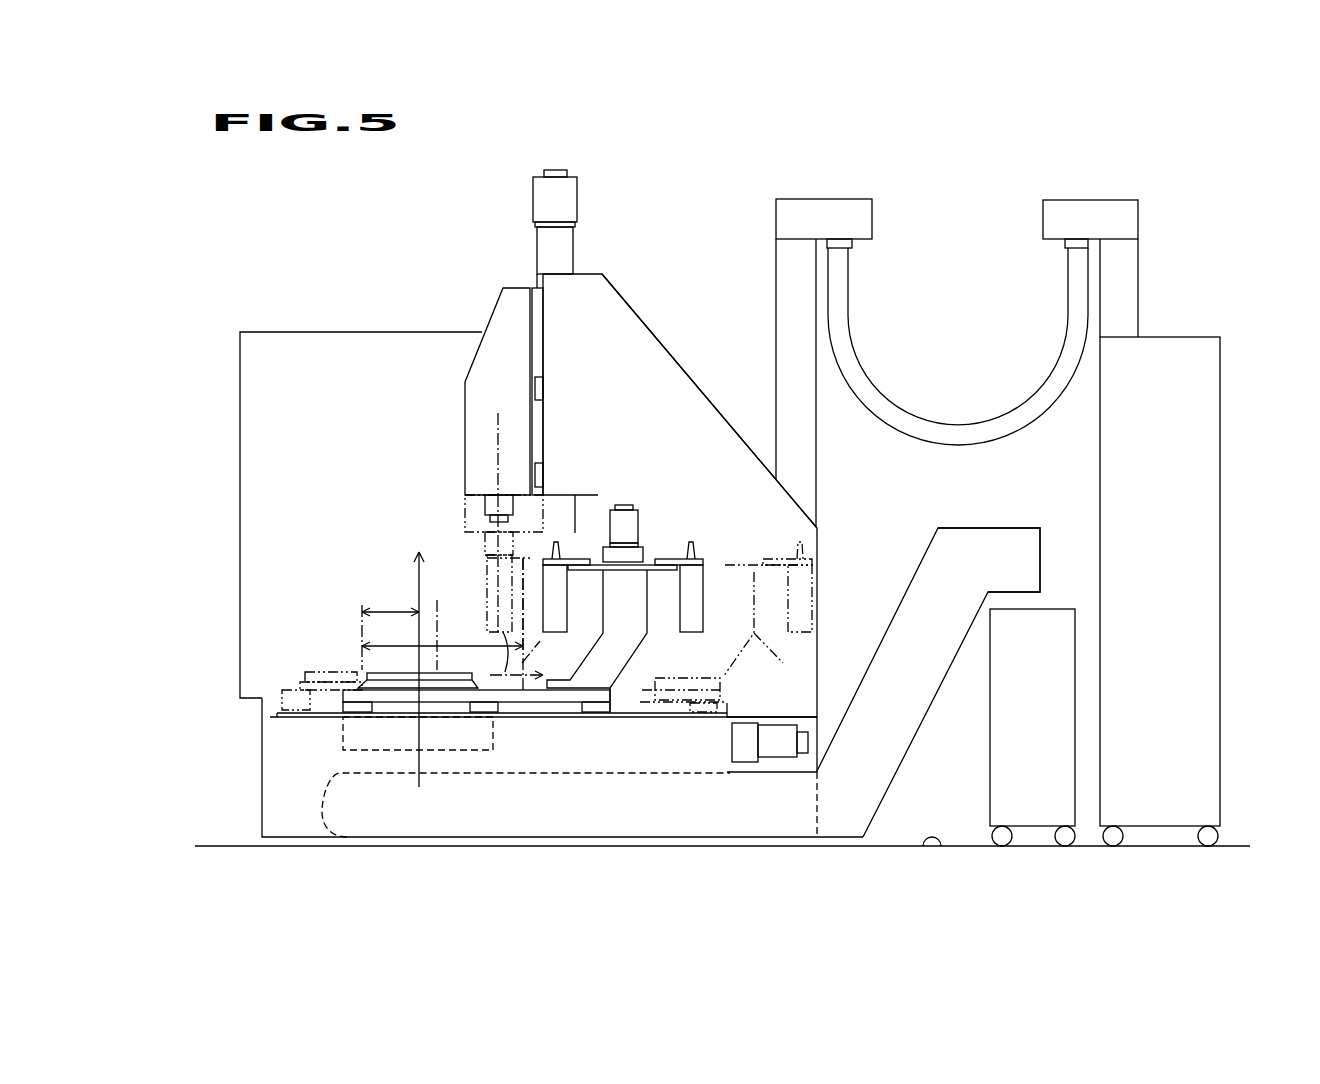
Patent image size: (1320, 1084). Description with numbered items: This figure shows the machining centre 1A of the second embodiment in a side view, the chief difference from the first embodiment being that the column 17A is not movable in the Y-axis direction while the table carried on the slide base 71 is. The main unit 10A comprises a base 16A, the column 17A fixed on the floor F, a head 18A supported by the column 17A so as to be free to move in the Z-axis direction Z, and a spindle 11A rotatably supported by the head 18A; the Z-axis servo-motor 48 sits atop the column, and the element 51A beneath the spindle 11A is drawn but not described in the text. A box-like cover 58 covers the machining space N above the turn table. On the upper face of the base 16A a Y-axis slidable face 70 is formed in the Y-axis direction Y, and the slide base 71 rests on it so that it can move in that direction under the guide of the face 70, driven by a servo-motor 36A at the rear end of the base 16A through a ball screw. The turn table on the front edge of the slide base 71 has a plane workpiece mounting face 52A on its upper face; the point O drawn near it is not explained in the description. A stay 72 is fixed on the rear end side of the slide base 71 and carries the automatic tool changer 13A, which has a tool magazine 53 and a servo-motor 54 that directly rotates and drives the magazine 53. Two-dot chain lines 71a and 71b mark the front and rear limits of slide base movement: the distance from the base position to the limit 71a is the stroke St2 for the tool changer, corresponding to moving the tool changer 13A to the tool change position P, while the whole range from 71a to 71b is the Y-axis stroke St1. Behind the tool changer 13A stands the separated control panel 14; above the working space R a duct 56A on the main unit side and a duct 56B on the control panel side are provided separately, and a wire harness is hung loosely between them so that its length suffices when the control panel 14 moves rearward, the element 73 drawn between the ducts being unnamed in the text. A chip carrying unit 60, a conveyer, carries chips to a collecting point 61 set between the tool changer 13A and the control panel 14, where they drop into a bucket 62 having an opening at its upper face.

The machining centre 1A is at (697, 190).
The main unit 10A is at (642, 321).
The spindle 11A is at (470, 545).
The automatic tool changer 13A is at (590, 573).
The separated control panel 14 is at (1100, 432).
The base 16A is at (262, 786).
The column 17A is at (681, 368).
The head 18A is at (466, 388).
The servo-motor 36A is at (775, 752).
The Z-axis servo-motor 48 is at (538, 198).
The tool holder 51A is at (493, 521).
The workpiece mounting face 52A is at (449, 673).
The tool magazine 53 is at (664, 572).
The servo-motor 54 is at (639, 518).
The duct 56A is at (858, 207).
The duct 56B is at (1127, 205).
The cover 58 is at (277, 330).
The chip carrying unit 60 is at (920, 731).
The collecting point 61 is at (1036, 528).
The bucket 62 is at (1044, 609).
The Y-axis slidable face 70 is at (325, 710).
The slide base 71 is at (338, 672).
The front movement limit of slide base 71a is at (277, 700).
The rear movement limit of slide base 71b is at (730, 693).
The stay 72 is at (648, 638).
The conduit 73 is at (881, 402).
The machining space N is at (364, 348).
The working space R is at (993, 451).
The floor F is at (922, 847).
The tool change position P is at (507, 692).
The Z-axis Z is at (414, 653).
The Y-axis Y is at (522, 657).
The origin O is at (435, 623).
The Y-axis stroke St1 is at (422, 673).
The stroke for the ATC St2 is at (388, 607).